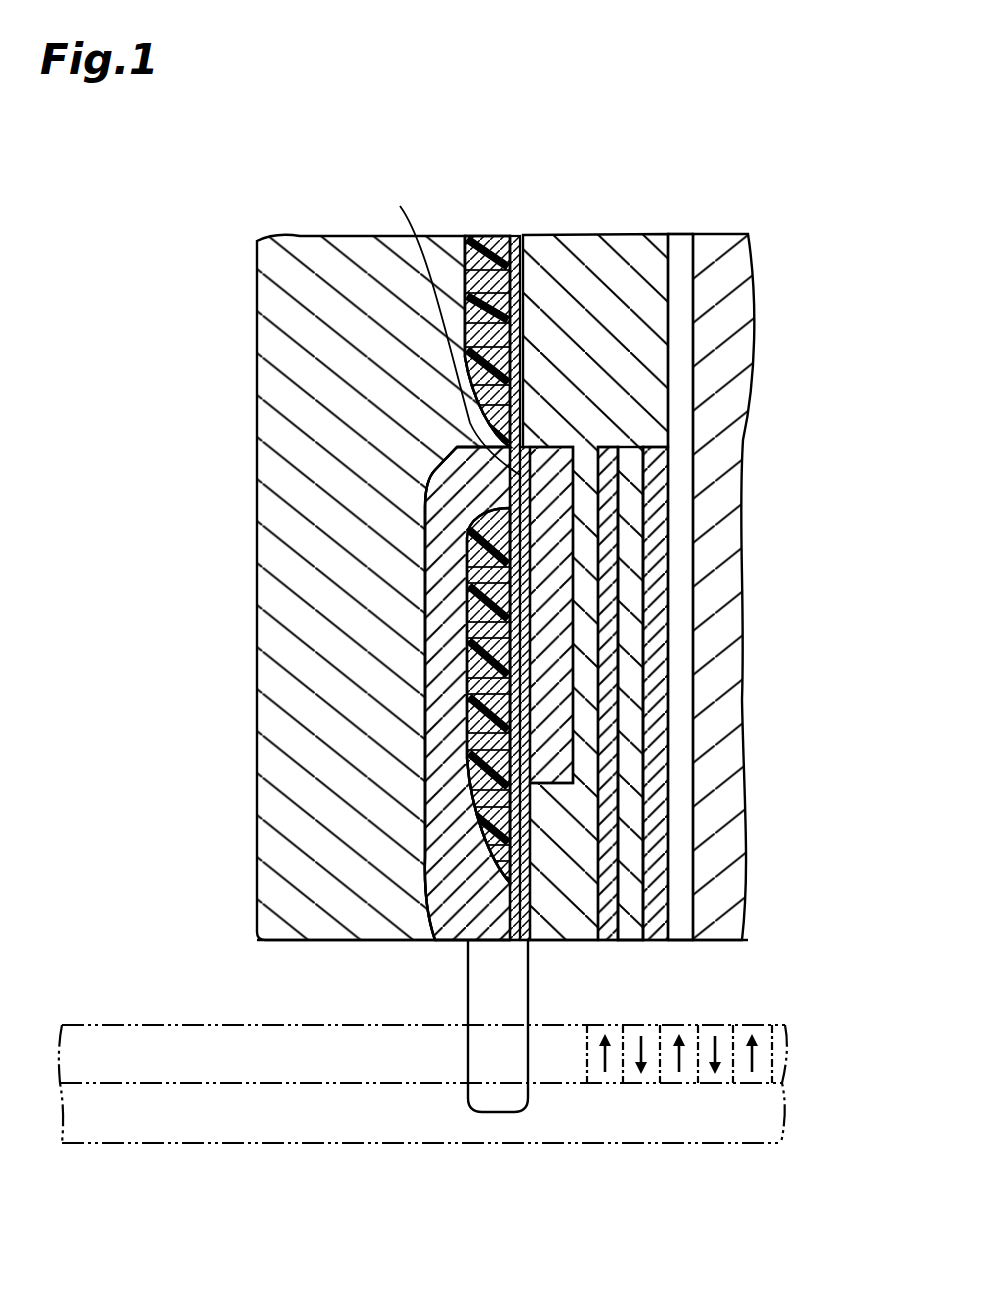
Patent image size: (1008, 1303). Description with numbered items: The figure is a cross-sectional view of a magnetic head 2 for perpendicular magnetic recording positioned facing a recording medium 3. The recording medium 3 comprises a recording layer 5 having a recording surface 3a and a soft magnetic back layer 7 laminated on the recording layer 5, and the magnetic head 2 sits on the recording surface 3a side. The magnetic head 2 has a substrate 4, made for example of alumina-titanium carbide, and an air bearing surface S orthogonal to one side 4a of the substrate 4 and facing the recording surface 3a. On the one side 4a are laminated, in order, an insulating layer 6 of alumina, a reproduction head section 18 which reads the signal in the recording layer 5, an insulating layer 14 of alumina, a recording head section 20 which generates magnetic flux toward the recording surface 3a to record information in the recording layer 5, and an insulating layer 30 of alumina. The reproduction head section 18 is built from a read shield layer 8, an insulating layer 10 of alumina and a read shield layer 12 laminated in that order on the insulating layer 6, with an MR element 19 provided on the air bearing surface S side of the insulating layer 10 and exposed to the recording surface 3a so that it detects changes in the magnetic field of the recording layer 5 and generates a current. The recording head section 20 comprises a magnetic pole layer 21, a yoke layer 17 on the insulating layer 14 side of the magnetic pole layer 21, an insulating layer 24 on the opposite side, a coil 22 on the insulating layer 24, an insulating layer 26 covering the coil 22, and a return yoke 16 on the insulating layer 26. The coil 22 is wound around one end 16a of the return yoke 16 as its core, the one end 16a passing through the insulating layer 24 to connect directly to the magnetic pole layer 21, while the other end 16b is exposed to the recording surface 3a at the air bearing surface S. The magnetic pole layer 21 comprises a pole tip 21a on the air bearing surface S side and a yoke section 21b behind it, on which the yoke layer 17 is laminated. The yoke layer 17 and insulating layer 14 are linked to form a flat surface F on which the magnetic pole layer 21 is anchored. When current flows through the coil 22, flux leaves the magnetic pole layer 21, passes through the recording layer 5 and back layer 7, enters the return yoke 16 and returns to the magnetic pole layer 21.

The magnetic head 2 is at (156, 180).
The recording medium 3 is at (476, 1061).
The recording surface 3a is at (723, 1022).
The substrate 4 is at (730, 277).
The one side of the substrate 4a is at (688, 244).
The recording layer 5 is at (778, 1057).
The insulating layer 6 is at (678, 332).
The soft magnetic back layer 7 is at (777, 1100).
The read shield layer 8 is at (653, 483).
The insulating layer 10 is at (632, 582).
The read shield layer 12 is at (615, 645).
The insulating layer 14 is at (556, 925).
The return yoke 16 is at (443, 615).
The one end of the return yoke 16a is at (460, 483).
The other end of the return yoke 16b is at (410, 942).
The yoke layer 17 is at (558, 725).
The reproduction head section 18 is at (709, 721).
The MR element 19 is at (685, 943).
The recording head section 20 is at (460, 946).
The magnetic pole layer 21 is at (700, 588).
The pole tip 21a is at (527, 892).
The yoke section 21b is at (520, 758).
The coil 22 is at (462, 575).
The insulating layer 24 is at (500, 860).
The insulating layer 26 is at (468, 246).
The insulating layer 30 is at (273, 805).
The flat surface F is at (453, 327).
The air bearing surface S is at (312, 942).